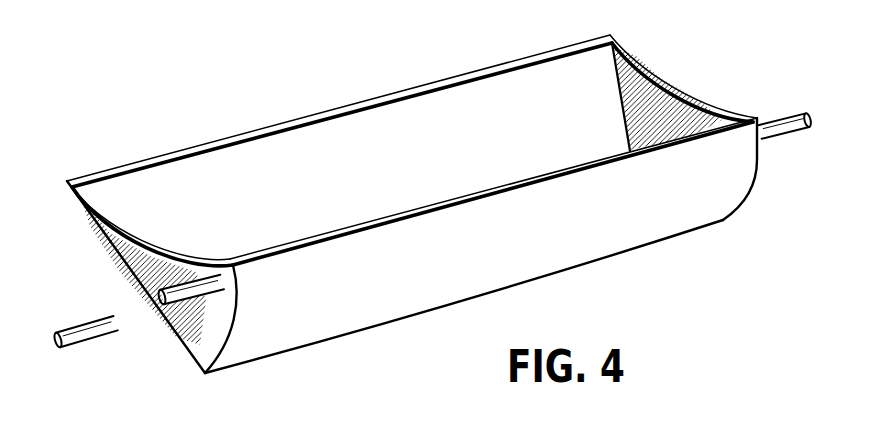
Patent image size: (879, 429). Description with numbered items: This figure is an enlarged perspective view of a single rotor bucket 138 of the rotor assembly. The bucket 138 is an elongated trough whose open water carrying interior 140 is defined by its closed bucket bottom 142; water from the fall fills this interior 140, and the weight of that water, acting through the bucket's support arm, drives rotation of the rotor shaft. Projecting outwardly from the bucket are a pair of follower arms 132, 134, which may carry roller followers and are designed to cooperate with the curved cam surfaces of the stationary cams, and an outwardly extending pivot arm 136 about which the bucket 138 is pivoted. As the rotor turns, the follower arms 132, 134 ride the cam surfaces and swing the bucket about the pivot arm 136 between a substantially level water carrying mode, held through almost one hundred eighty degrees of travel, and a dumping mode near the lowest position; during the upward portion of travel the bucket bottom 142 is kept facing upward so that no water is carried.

The follower arm 132 is at (777, 118).
The follower arm 134 is at (192, 282).
The pivot arm 136 is at (75, 330).
The rotor bucket 138 is at (582, 266).
The open water carrying interior 140 is at (337, 135).
The bucket bottom 142 is at (173, 363).